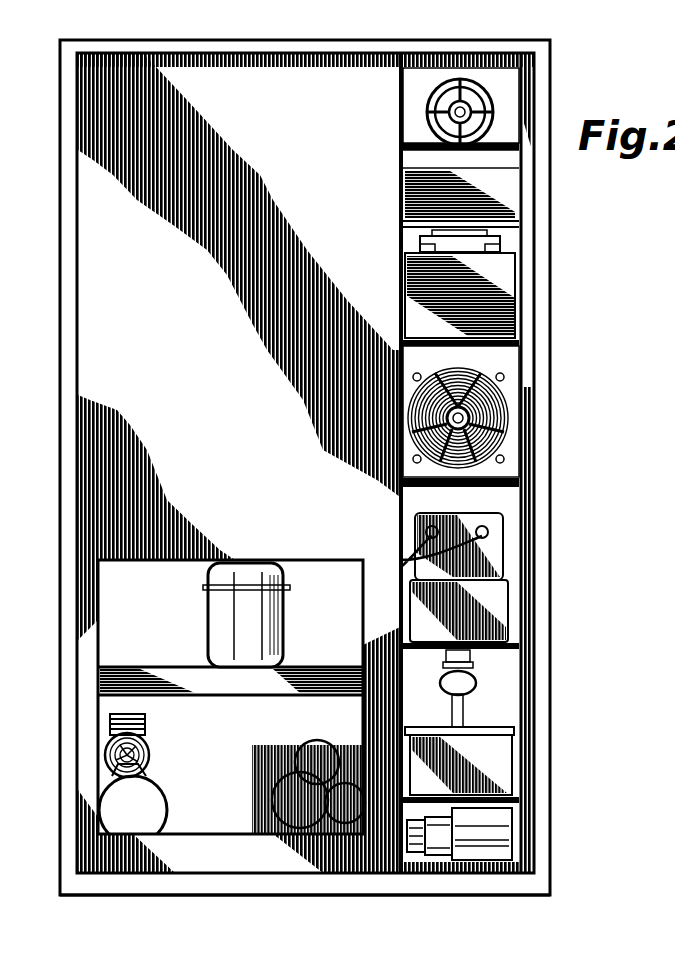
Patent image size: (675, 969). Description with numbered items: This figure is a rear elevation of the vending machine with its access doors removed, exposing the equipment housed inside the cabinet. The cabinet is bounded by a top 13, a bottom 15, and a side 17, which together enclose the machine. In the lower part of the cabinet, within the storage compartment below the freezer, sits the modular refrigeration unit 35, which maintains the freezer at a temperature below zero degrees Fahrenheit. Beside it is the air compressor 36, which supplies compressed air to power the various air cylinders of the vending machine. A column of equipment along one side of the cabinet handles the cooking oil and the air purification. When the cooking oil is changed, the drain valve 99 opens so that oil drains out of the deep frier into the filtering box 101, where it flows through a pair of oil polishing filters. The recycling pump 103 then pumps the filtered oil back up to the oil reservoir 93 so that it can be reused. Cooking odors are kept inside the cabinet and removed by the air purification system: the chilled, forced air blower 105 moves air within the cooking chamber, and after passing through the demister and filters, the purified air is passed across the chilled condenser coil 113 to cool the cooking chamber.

The top 13 is at (495, 43).
The bottom 15 is at (485, 885).
The side 17 is at (542, 355).
The modular refrigeration unit 35 is at (213, 626).
The air compressor 36 is at (150, 803).
The oil reservoir 93 is at (507, 270).
The drain valve 99 is at (470, 688).
The filtering box 101 is at (488, 752).
The recycling pump 103 is at (503, 836).
The chilled forced air blower 105 is at (497, 107).
The chilled condenser coil 113 is at (507, 442).